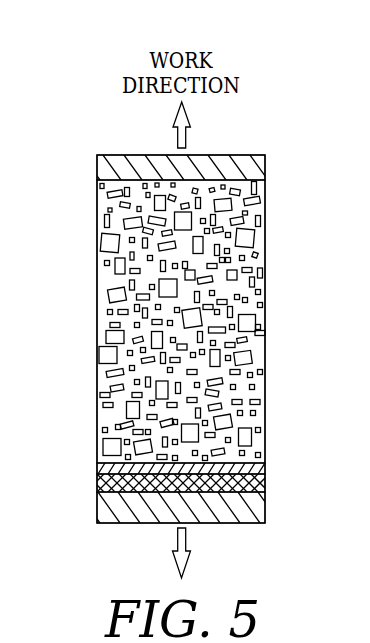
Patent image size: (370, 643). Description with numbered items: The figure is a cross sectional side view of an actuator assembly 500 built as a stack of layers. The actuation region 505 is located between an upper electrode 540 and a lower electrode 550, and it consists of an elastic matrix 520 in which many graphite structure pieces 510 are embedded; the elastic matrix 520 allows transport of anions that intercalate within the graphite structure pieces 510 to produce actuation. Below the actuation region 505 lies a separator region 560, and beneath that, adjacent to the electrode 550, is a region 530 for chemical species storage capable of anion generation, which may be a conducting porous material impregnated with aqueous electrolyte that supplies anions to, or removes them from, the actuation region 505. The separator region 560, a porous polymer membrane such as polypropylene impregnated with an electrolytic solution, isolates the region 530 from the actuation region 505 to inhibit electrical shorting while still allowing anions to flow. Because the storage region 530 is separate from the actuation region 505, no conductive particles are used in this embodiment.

The actuator assembly 500 is at (72, 170).
The actuation region 505 is at (82, 182).
The graphite structure pieces 510 is at (251, 236).
The elastic matrix 520 is at (265, 360).
The chemical species storage region 530 is at (265, 493).
The electrode 540 is at (263, 173).
The electrode 550 is at (248, 520).
The separator region 560 is at (255, 463).